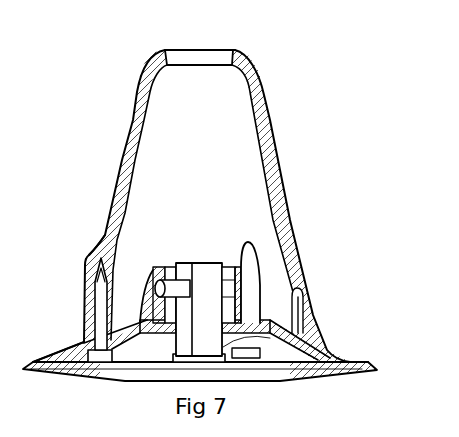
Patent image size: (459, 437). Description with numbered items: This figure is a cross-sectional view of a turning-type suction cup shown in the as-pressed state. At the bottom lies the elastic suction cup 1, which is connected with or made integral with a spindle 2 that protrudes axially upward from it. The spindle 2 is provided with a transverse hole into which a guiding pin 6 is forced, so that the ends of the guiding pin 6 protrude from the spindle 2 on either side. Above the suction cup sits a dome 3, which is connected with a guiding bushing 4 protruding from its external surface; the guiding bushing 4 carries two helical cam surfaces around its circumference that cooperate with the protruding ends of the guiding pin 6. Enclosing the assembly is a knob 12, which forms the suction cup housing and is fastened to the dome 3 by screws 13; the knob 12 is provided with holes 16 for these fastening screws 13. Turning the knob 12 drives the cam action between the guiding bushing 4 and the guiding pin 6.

The elastic suction cup 1 is at (267, 377).
The spindle 2 is at (210, 278).
The dome 3 is at (63, 350).
The guiding bushing 4 is at (247, 307).
The guiding pin 6 is at (158, 263).
The knob 12 is at (133, 100).
The screws 13 is at (102, 303).
The holes 16 is at (97, 243).